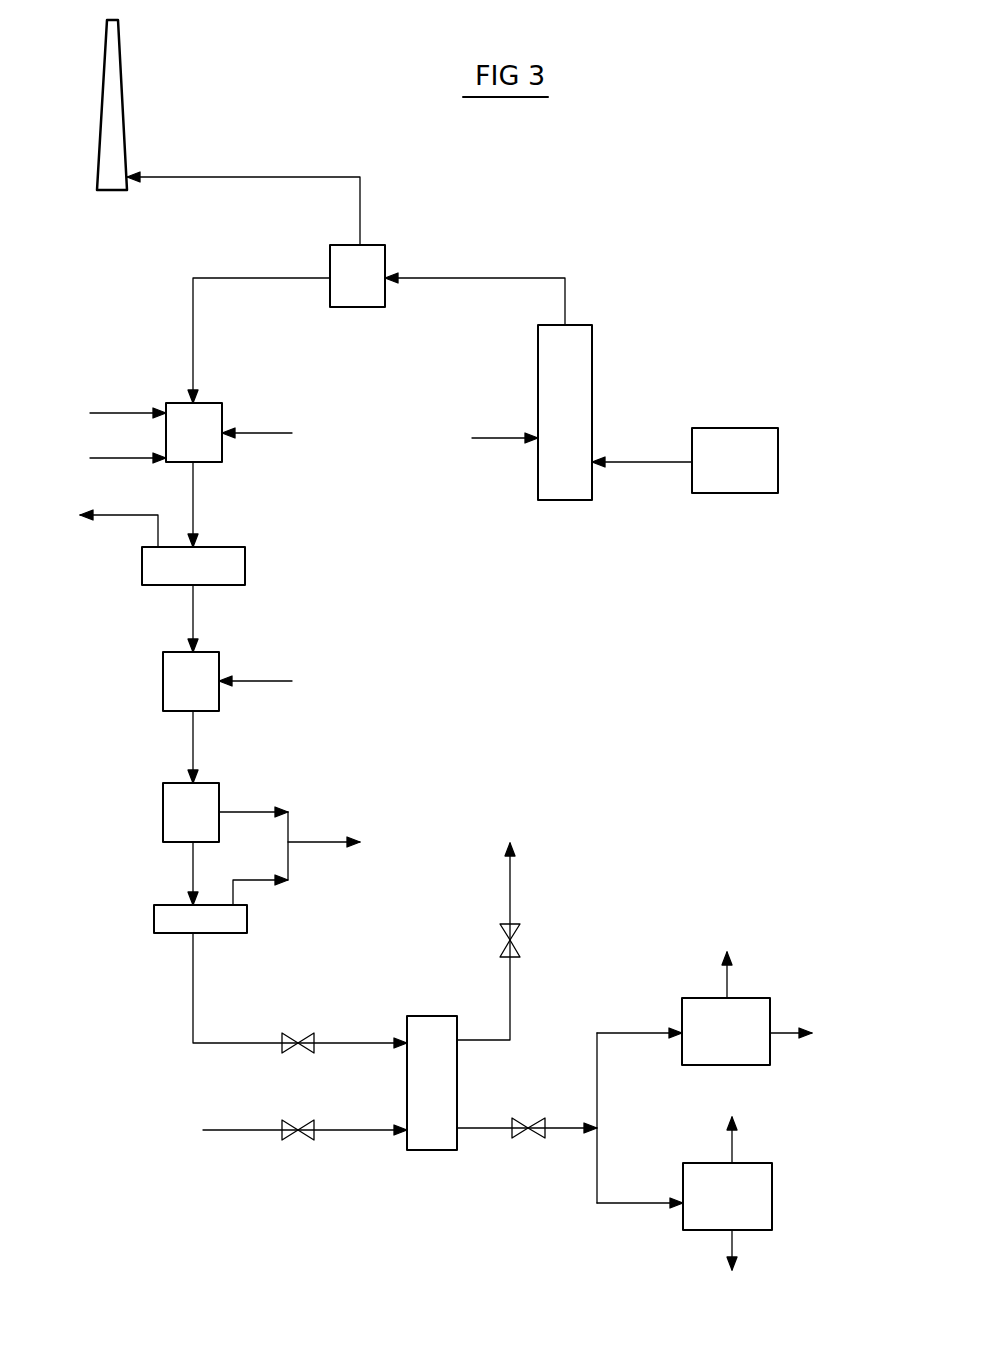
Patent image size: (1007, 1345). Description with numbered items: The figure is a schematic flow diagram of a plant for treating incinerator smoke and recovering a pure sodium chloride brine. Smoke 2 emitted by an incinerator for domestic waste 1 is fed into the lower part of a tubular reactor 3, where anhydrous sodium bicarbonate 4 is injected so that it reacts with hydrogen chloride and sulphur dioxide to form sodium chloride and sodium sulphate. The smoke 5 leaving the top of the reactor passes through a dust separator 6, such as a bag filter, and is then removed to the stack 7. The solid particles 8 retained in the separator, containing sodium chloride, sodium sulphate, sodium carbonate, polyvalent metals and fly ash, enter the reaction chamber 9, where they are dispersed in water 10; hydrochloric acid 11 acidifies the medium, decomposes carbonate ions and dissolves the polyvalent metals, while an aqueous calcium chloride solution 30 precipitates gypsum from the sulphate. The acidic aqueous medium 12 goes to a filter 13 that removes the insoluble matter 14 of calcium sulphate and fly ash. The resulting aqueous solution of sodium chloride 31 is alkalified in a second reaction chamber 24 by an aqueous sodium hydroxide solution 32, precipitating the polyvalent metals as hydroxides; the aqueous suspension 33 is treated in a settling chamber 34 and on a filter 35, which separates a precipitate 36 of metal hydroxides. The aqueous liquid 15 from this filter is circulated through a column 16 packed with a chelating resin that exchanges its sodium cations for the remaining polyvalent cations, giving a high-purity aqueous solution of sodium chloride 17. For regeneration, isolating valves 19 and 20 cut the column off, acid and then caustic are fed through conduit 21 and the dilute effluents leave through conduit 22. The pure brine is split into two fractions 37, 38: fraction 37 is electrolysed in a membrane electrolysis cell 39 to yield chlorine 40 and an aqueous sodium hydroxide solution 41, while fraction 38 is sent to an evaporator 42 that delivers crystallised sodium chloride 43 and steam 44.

The incinerator for domestic waste 1 is at (745, 445).
The smoke 2 is at (635, 462).
The tubular reactor 3 is at (592, 358).
The sodium bicarbonate 4 is at (485, 440).
The smoke 5 is at (472, 278).
The dust separator 6 is at (360, 282).
The stack 7 is at (120, 117).
The solid particles 8 is at (185, 340).
The reaction chamber 9 is at (183, 449).
The water 10 is at (267, 432).
The hydrochloric acid 11 is at (118, 412).
The acidic aqueous medium 12 is at (193, 497).
The filter 13 is at (245, 563).
The insoluble matter 14 is at (112, 518).
The aqueous liquid 15 is at (194, 987).
The column 16 is at (430, 1152).
The aqueous solution of sodium chloride 17 is at (575, 1122).
The isolating valve 19 is at (297, 1027).
The isolating valve 20 is at (530, 1138).
The conduit 21 is at (242, 1132).
The conduit 22 is at (513, 987).
The reaction chamber 24 is at (172, 697).
The aqueous calcium chloride solution 30 is at (122, 457).
The aqueous solution of sodium chloride 31 is at (193, 614).
The aqueous sodium hydroxide solution 32 is at (265, 680).
The aqueous suspension 33 is at (193, 742).
The settling chamber 34 is at (163, 812).
The filter 35 is at (154, 920).
The precipitate of polyvalent metal hydroxides 36 is at (317, 842).
The fraction 37 is at (640, 1032).
The fraction 38 is at (637, 1205).
The electrolysis cell 39 is at (748, 1052).
The chlorine 40 is at (732, 978).
The aqueous sodium hydroxide solution 41 is at (787, 1025).
The evaporator 42 is at (748, 1195).
The crystallised sodium chloride 43 is at (737, 1245).
The steam 44 is at (732, 1143).